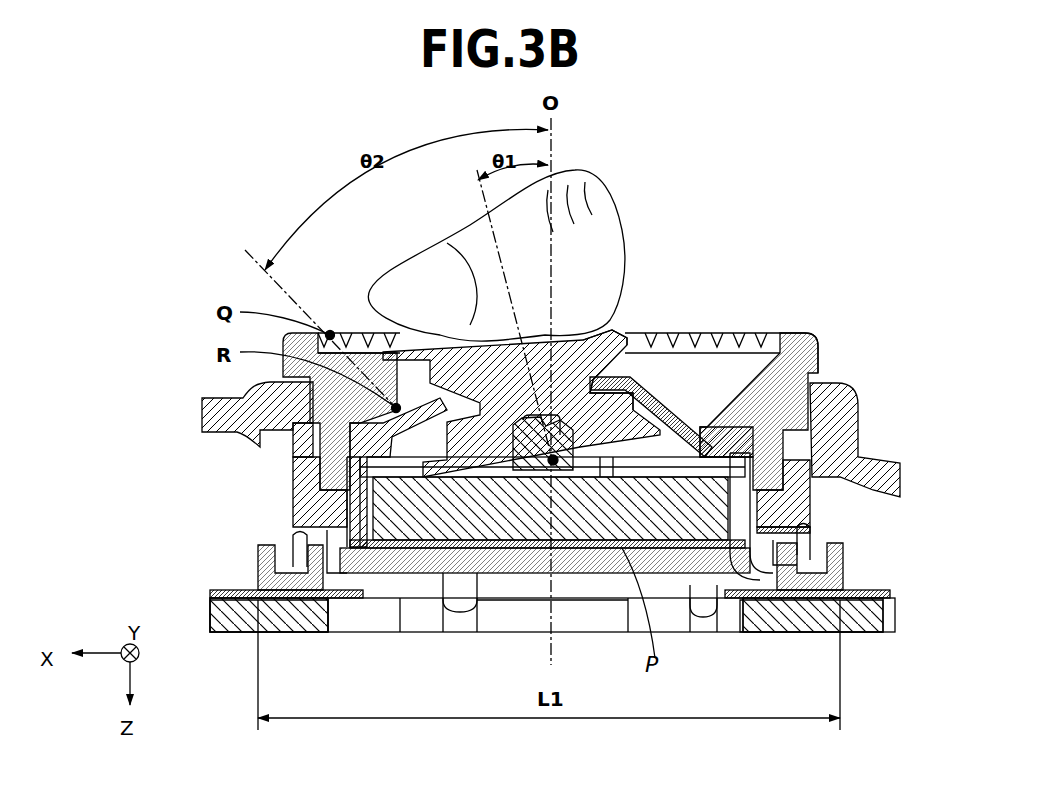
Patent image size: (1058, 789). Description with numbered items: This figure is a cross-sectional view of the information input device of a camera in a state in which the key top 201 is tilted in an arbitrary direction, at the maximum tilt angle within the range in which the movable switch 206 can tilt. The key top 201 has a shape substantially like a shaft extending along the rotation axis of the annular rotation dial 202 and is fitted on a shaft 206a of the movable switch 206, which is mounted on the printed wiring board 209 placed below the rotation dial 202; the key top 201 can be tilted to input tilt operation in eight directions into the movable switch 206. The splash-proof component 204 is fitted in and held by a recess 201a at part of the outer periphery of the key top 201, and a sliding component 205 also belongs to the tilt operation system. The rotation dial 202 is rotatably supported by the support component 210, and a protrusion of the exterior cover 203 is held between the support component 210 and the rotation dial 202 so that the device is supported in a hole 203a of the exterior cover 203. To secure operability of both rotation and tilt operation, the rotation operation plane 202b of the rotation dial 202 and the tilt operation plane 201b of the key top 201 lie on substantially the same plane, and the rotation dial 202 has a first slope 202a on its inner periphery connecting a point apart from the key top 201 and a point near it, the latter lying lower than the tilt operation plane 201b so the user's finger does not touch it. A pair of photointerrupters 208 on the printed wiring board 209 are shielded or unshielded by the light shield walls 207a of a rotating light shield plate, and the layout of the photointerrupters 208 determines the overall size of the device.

The key top 201 is at (480, 370).
The recess 201a is at (632, 332).
The tilt operation plane 201b is at (590, 340).
The rotation dial 202 is at (823, 368).
The first slope 202a is at (733, 372).
The rotation operation plane 202b is at (790, 345).
The exterior cover 203 is at (208, 410).
The hole 203a is at (290, 445).
The splash-proof component 204 is at (300, 500).
The sliding component 205 is at (345, 445).
The movable switch 206 is at (540, 548).
The shaft 206a is at (460, 562).
The light shield walls 207a is at (828, 553).
The photointerrupters 208 is at (262, 556).
The printed wiring board 209 is at (285, 622).
The support component 210 is at (855, 470).